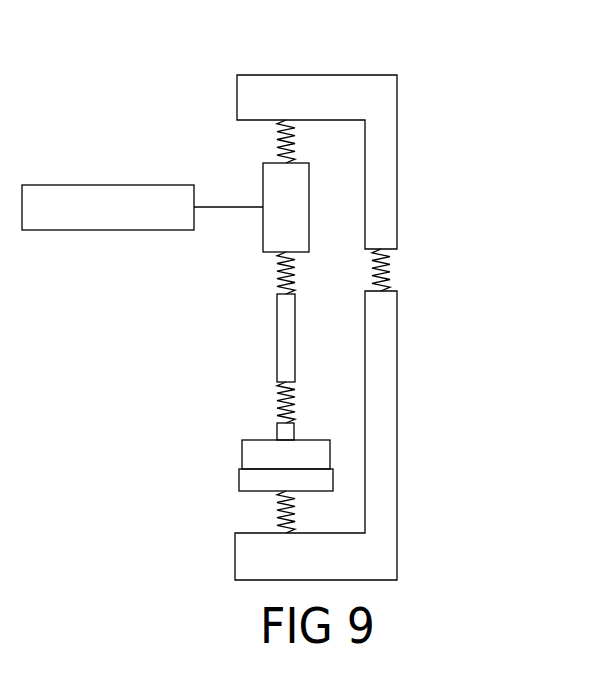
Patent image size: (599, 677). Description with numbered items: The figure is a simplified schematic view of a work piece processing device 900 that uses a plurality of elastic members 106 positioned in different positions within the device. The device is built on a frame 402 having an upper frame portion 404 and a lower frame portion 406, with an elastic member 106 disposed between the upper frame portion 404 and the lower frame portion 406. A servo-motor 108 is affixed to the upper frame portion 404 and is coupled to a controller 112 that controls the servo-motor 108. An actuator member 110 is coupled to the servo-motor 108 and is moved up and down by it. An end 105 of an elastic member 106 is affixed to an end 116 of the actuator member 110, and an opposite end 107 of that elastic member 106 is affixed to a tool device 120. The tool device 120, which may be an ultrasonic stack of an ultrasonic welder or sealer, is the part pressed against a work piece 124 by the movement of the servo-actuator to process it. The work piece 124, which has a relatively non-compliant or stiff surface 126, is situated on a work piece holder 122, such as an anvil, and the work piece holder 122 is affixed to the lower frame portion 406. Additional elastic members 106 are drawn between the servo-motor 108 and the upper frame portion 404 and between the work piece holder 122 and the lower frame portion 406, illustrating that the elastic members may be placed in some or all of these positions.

The work piece processing device 900 is at (421, 99).
The frame 402 is at (429, 294).
The upper frame portion 404 is at (388, 200).
The lower frame portion 406 is at (390, 370).
The elastic member 106 is at (276, 148).
The servo-motor 108 is at (263, 183).
The controller 112 is at (108, 230).
The end of elastic member 105 is at (291, 381).
The actuator member 110 is at (277, 340).
The end of actuator member 116 is at (290, 390).
The opposite end of elastic member 107 is at (278, 424).
The tool device 120 is at (277, 432).
The surface 126 is at (303, 440).
The work piece 124 is at (241, 453).
The work piece holder 122 is at (239, 480).